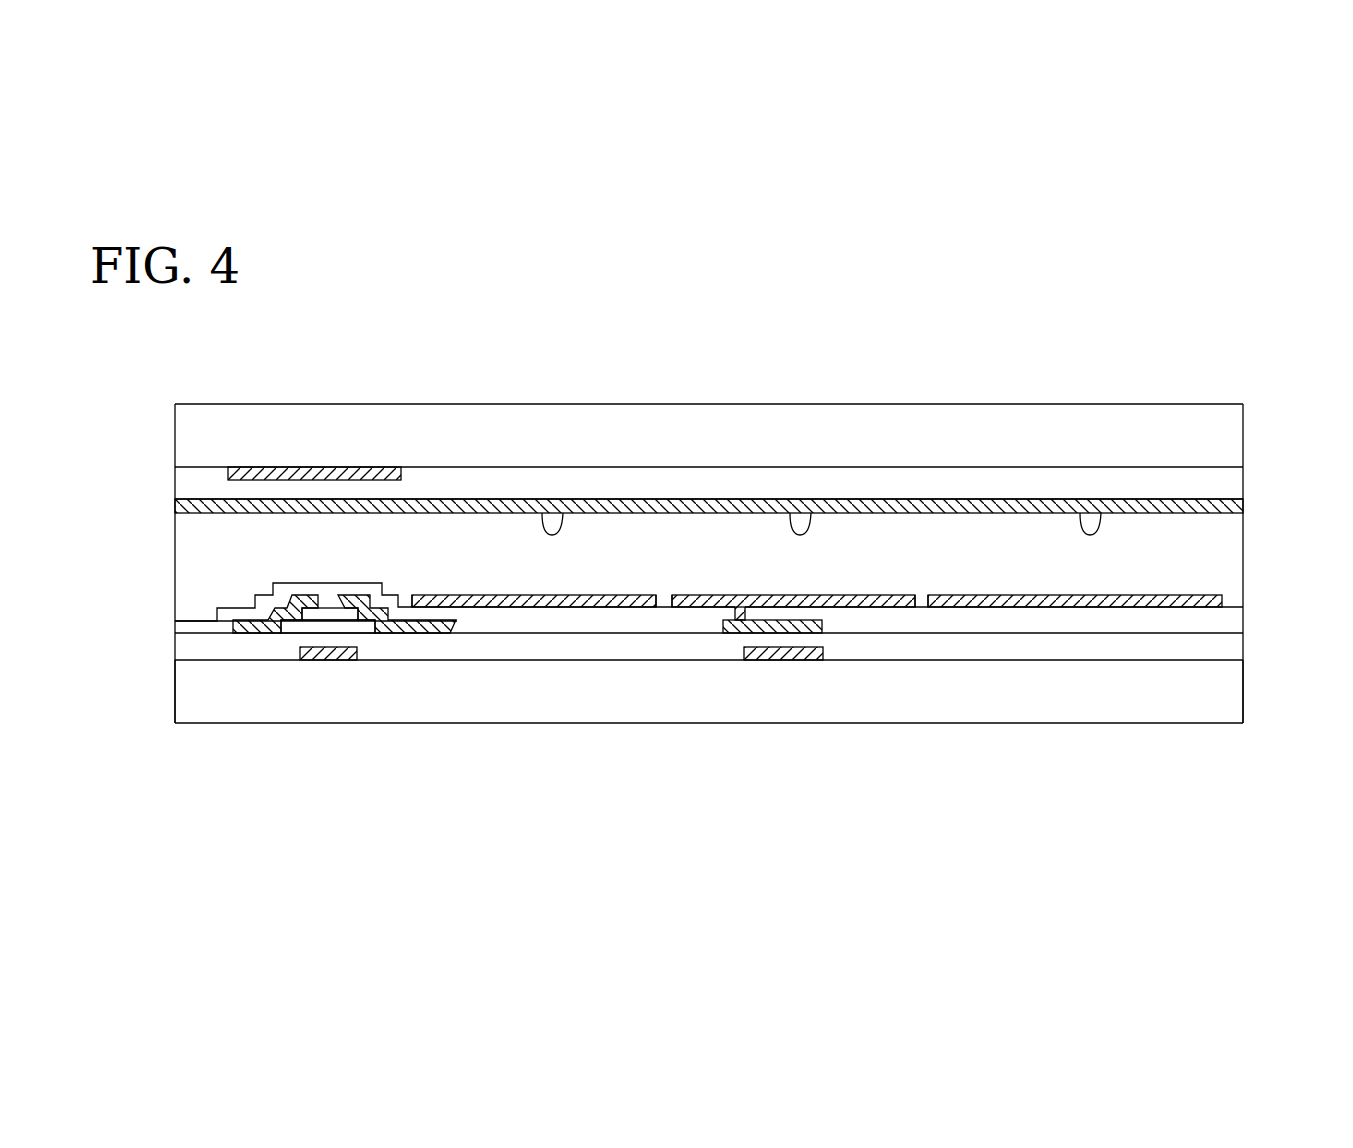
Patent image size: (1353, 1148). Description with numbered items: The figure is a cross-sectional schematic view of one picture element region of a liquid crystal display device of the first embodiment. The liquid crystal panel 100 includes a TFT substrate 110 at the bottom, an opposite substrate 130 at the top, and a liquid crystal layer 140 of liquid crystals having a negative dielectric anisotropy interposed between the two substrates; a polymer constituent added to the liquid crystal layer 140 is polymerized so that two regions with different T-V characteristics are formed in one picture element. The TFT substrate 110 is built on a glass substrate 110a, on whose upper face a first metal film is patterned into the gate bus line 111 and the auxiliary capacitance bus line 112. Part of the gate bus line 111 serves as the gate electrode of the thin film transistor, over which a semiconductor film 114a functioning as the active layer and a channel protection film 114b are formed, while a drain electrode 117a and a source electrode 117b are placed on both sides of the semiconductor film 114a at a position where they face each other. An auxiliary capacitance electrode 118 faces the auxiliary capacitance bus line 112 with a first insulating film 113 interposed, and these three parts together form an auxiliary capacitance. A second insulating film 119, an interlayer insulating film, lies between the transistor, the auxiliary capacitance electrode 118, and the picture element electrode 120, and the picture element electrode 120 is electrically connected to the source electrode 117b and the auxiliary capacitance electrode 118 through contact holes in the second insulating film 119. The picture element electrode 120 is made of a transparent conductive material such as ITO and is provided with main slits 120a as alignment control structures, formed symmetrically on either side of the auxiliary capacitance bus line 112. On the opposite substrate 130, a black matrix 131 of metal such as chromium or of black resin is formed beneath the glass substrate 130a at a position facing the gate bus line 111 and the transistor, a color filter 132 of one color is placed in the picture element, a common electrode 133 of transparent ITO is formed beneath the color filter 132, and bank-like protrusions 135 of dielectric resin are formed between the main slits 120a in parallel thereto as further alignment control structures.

The liquid crystal panel 100 is at (238, 390).
The TFT substrate 110 is at (170, 618).
The glass substrate 110a is at (1236, 691).
The gate bus line 111 is at (327, 660).
The auxiliary capacitance bus line 112 is at (793, 660).
The first insulating film 113 is at (1236, 649).
The semiconductor film 114a is at (363, 633).
The channel protection film 114b is at (325, 613).
The drain electrode 117a is at (250, 633).
The source electrode 117b is at (408, 633).
The auxiliary capacitance electrode 118 is at (733, 634).
The second insulating film 119 is at (1236, 627).
The picture element electrode 120 is at (1180, 594).
The main slit 120a is at (664, 594).
The opposite substrate 130 is at (170, 405).
The glass substrate 130a is at (1225, 437).
The black matrix 131 is at (368, 467).
The color filter 132 is at (604, 483).
The common electrode 133 is at (1016, 500).
The bank-like protrusion 135 is at (552, 517).
The liquid crystal layer 140 is at (175, 558).